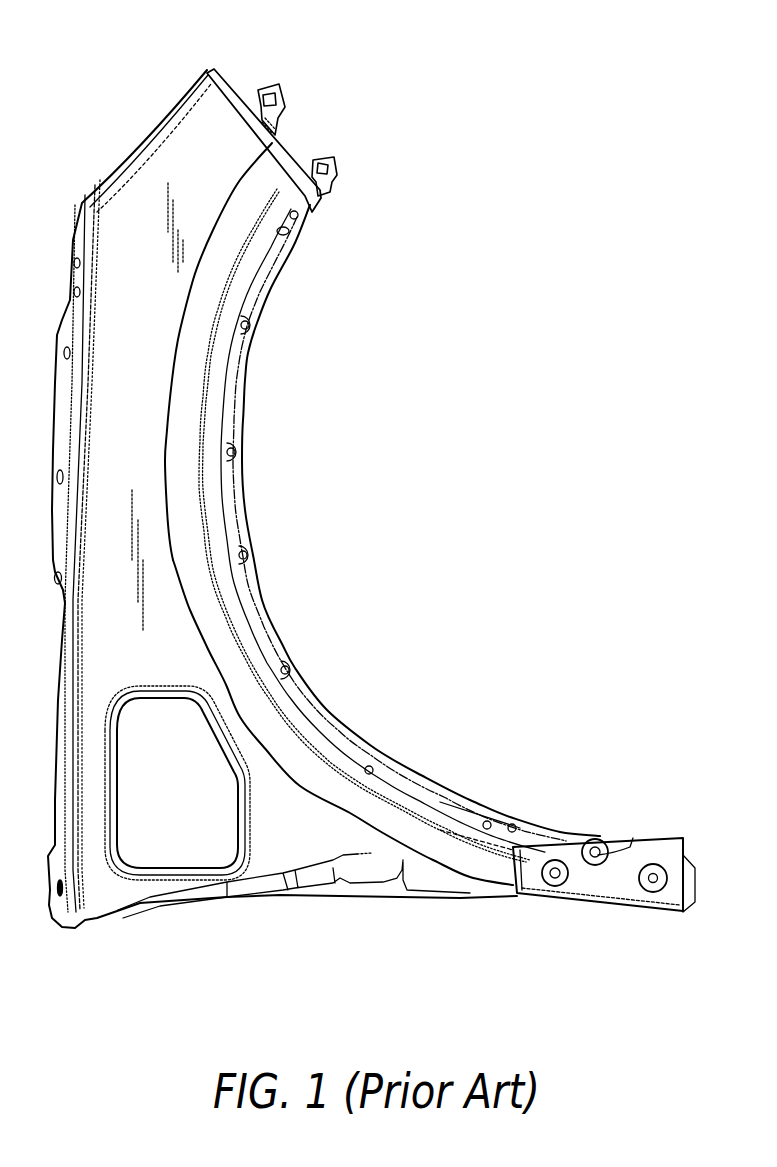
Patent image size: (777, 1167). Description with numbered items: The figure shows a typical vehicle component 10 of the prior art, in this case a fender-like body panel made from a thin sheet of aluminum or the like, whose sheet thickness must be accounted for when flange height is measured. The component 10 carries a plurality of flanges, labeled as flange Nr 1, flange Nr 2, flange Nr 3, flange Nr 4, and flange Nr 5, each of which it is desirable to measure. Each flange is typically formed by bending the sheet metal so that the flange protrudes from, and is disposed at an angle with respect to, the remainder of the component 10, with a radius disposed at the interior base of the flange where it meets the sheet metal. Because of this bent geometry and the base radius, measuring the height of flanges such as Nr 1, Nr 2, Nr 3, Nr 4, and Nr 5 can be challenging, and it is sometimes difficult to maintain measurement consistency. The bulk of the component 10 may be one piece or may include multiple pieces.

The flange Nr 4 is at (166, 100).
The vehicle component 10 is at (325, 113).
The flange Nr 3 is at (259, 422).
The flange Nr 2 is at (336, 702).
The flange Nr 1 is at (545, 812).
The flange Nr 5 is at (621, 916).